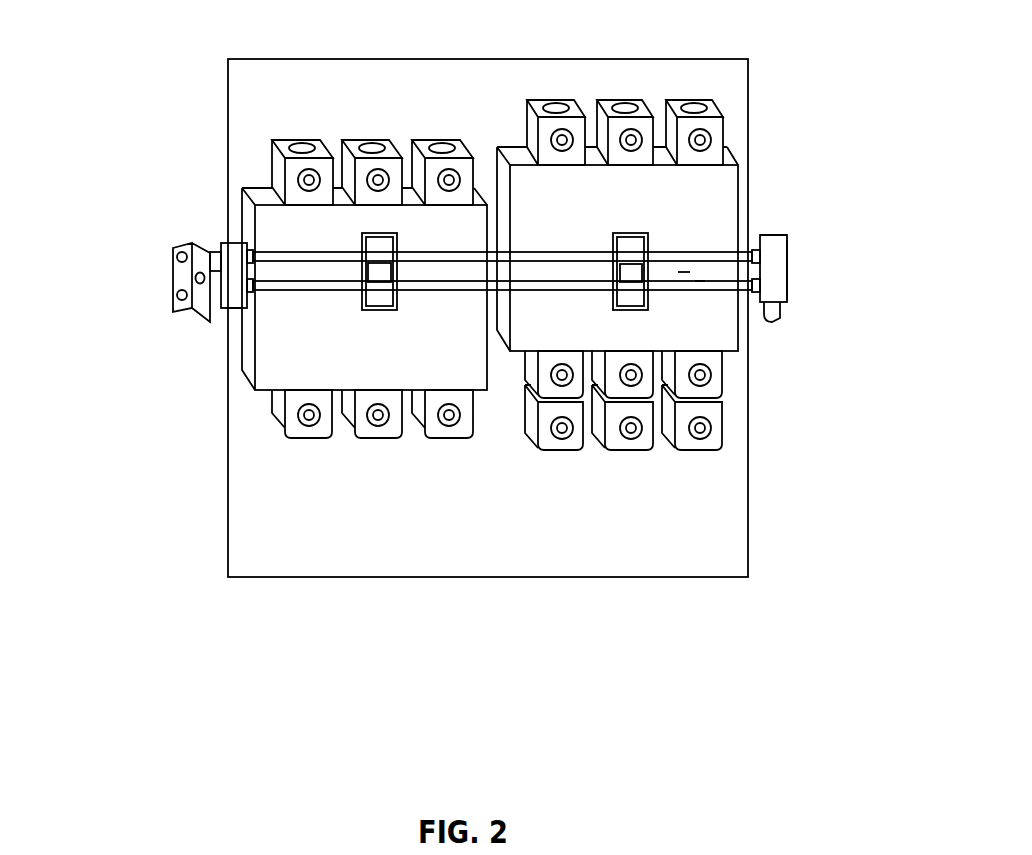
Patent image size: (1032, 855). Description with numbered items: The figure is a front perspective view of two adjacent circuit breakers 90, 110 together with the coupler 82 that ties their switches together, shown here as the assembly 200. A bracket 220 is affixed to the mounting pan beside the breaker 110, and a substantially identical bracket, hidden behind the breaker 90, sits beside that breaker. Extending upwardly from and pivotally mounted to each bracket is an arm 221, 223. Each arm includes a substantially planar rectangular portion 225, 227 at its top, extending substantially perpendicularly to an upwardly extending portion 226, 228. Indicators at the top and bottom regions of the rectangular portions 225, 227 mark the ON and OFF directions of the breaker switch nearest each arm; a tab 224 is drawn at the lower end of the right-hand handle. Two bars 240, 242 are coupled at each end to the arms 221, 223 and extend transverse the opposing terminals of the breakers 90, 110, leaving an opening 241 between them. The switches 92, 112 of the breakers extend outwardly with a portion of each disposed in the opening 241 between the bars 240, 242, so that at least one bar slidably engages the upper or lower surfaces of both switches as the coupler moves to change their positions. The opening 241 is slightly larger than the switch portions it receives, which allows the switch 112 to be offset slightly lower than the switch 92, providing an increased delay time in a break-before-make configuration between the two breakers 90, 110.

The coupler 82 is at (275, 372).
The circuit breaker 90 is at (715, 330).
The switch 92 is at (633, 277).
The circuit breaker 110 is at (315, 287).
The breaker switch 112 is at (362, 262).
The interlock mechanism 200 is at (470, 290).
The bracket 220 is at (180, 273).
The arm 221 is at (215, 325).
The arm 223 is at (797, 240).
The handle tab 224 is at (780, 312).
The rectangular portion 225 is at (218, 258).
The upwardly extending portion 226 is at (212, 248).
The rectangular portion 227 is at (777, 272).
The upwardly extending portion 228 is at (798, 268).
The bar 240 is at (678, 272).
The opening 241 is at (688, 280).
The bar 242 is at (700, 284).